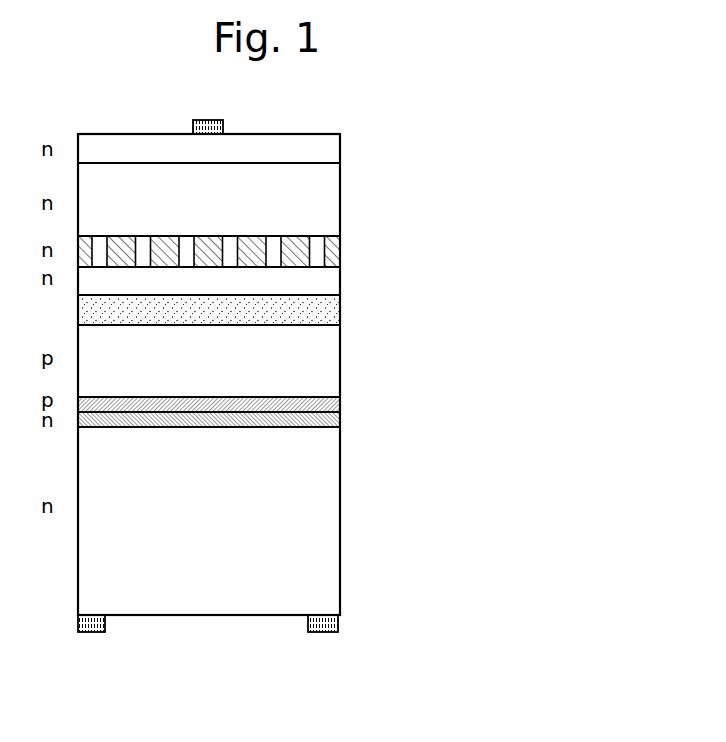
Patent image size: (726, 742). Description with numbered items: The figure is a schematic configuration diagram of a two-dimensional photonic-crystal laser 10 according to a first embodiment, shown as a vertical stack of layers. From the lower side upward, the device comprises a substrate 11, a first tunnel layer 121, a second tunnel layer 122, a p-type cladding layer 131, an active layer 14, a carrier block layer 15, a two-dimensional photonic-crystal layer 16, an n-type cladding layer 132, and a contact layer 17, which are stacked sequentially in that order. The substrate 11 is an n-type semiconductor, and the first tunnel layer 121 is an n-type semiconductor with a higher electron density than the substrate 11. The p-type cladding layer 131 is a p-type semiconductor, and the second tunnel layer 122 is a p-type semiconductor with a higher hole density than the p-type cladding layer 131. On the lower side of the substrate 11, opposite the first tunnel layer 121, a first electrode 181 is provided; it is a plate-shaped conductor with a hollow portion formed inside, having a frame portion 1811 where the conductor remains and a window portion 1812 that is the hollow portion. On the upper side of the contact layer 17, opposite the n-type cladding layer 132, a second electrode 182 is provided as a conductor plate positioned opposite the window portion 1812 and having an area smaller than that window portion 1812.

The two-dimensional photonic-crystal laser 10 is at (426, 666).
The substrate 11 is at (325, 515).
The first tunnel layer 121 is at (338, 425).
The second tunnel layer 122 is at (338, 398).
The p-type cladding layer 131 is at (325, 365).
The n-type cladding layer 132 is at (325, 205).
The active layer 14 is at (325, 313).
The carrier block layer 15 is at (325, 283).
The two-dimensional photonic-crystal layer 16 is at (337, 252).
The contact layer 17 is at (325, 153).
The first electrode 181 is at (250, 647).
The frame portion 1811 is at (85, 633).
The window portion 1812 is at (205, 627).
The second electrode 182 is at (214, 120).